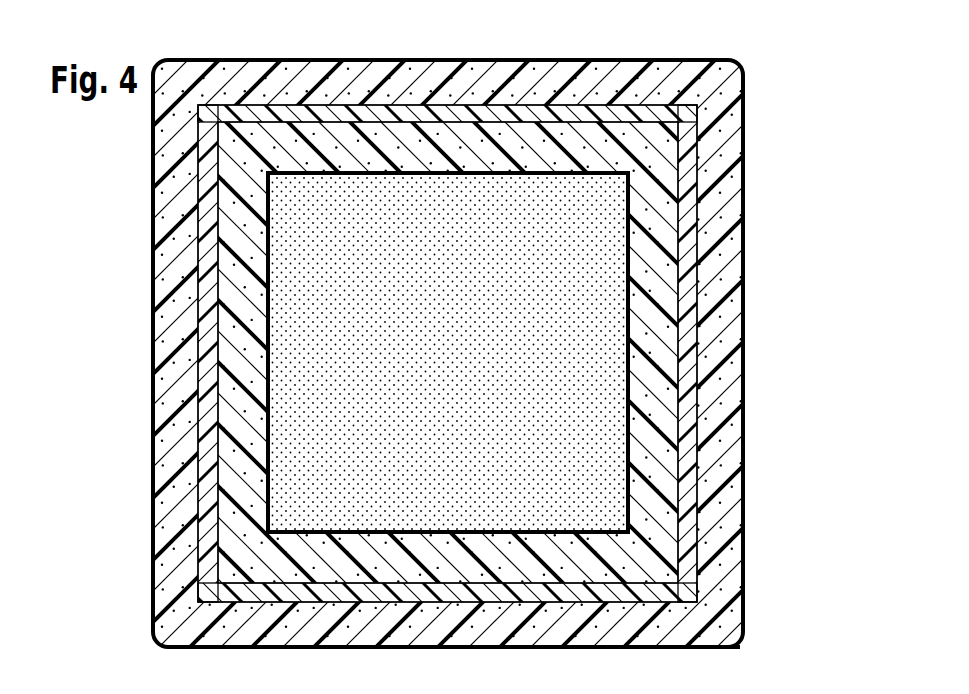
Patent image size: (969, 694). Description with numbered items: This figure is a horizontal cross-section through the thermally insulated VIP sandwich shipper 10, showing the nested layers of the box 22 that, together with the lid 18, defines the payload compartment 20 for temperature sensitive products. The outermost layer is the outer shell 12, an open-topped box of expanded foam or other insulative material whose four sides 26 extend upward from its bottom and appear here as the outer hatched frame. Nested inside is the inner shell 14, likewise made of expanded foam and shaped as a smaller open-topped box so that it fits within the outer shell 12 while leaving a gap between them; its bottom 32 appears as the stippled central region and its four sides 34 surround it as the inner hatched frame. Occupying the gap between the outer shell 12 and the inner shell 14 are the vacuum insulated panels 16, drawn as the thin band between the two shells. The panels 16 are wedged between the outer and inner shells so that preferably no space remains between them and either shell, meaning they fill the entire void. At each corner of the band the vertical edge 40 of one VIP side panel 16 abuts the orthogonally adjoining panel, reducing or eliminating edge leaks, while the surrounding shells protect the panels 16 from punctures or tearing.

The thermally insulated VIP sandwich shipper 10 is at (786, 153).
The outer shell 12 is at (744, 203).
The inner shell 14 is at (650, 322).
The vacuum insulated panels 16 is at (567, 113).
The lid 18 is at (725, 670).
The payload compartment 20 is at (563, 452).
The box 22 is at (762, 510).
The sides of outer shell 26 is at (324, 119).
The bottom of inner shell 32 is at (582, 413).
The sides of inner shell 34 is at (462, 184).
The edge of VIP panel 40 is at (200, 107).